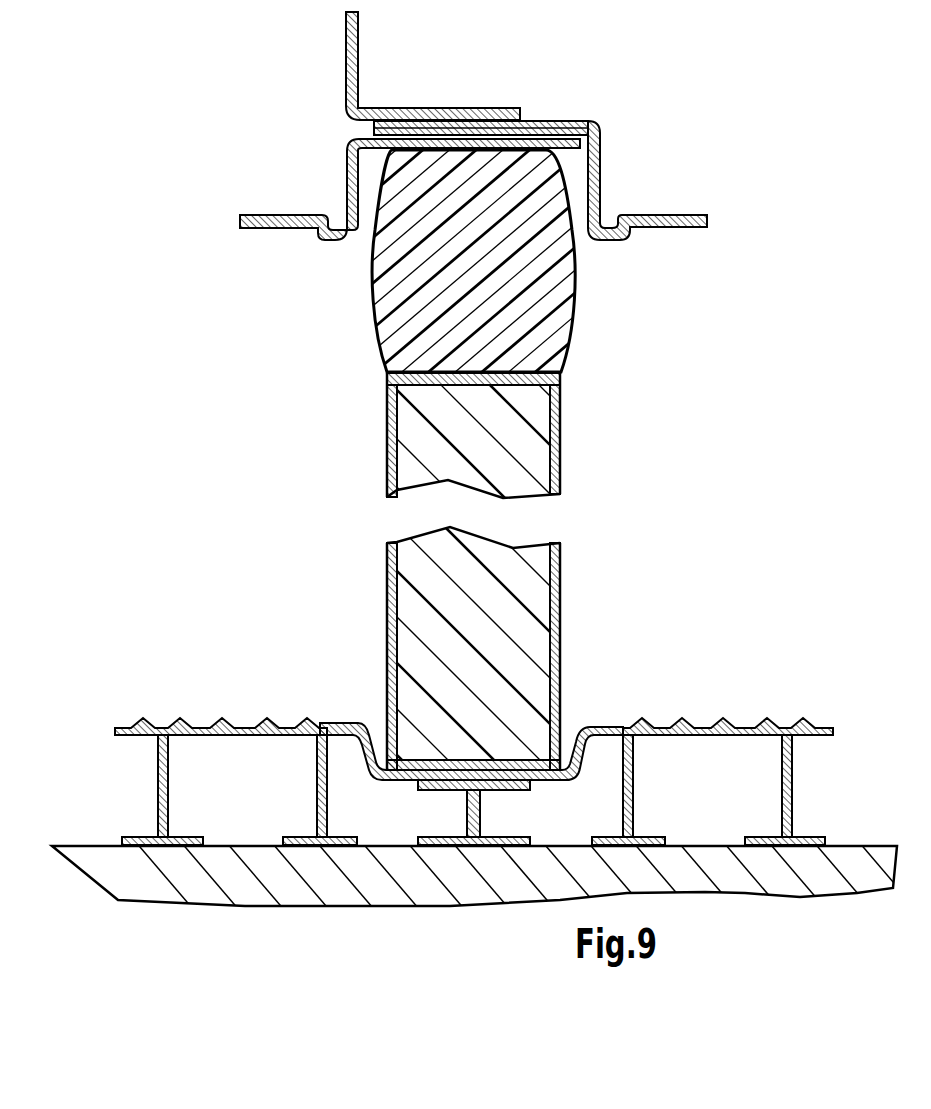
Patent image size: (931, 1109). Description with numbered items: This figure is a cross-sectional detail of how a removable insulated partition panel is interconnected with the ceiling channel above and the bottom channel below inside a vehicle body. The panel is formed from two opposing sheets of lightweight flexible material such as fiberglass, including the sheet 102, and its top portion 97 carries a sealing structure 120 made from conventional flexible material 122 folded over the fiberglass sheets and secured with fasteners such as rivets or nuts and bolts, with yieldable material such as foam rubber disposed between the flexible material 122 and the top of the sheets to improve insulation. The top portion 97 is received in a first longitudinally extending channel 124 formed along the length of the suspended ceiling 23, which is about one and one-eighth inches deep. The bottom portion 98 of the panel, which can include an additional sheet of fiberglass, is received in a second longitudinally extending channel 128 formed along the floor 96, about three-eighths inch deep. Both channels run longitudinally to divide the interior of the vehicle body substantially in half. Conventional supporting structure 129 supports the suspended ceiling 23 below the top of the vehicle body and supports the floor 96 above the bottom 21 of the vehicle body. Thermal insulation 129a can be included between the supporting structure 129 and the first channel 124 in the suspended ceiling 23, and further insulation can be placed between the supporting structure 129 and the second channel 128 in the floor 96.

The bottom 21 is at (110, 862).
The suspended ceiling 23 is at (663, 213).
The floor 96 is at (247, 727).
The top portion 97 is at (322, 374).
The bottom portion 98 is at (451, 648).
The sheet of lightweight flexible material 102 is at (449, 436).
The sealing structure 120 is at (500, 235).
The flexible material 122 is at (378, 317).
The first longitudinally extending channel 124 is at (580, 179).
The second longitudinally extending channel 128 is at (371, 719).
The supporting structure 129 is at (373, 70).
The thermal insulation 129a is at (375, 131).